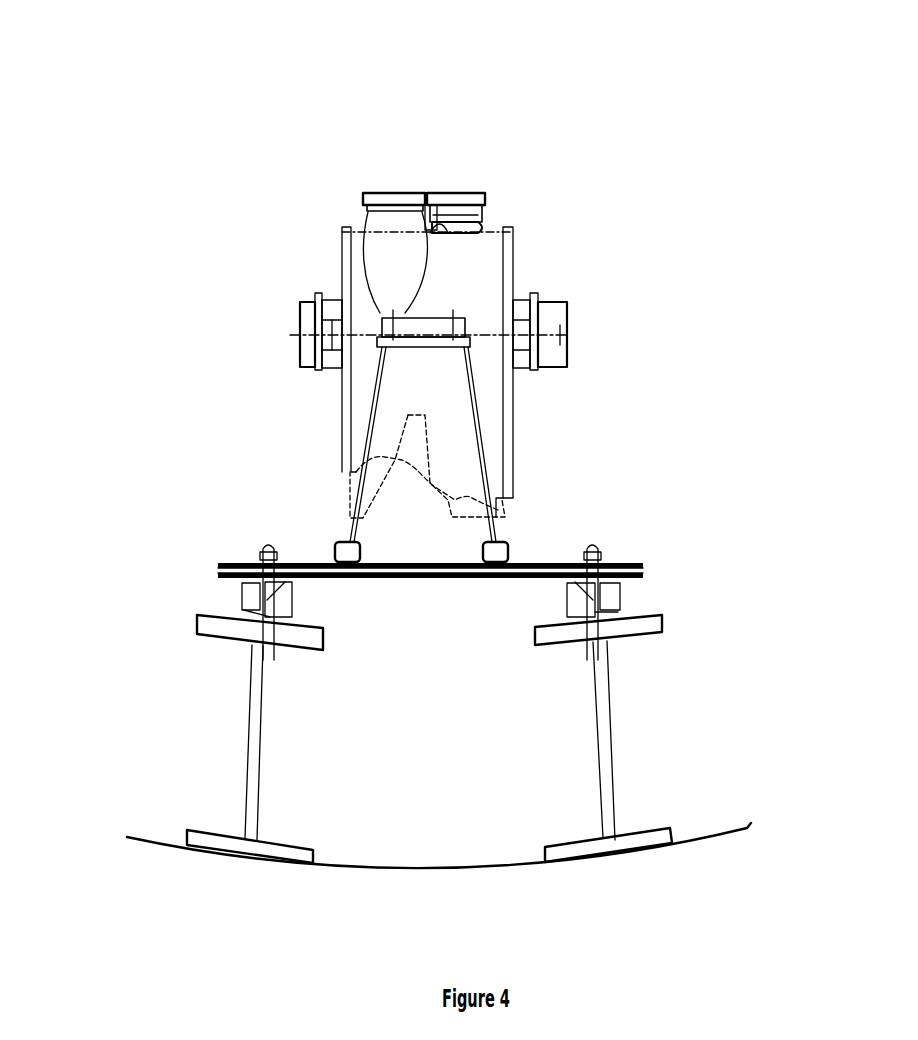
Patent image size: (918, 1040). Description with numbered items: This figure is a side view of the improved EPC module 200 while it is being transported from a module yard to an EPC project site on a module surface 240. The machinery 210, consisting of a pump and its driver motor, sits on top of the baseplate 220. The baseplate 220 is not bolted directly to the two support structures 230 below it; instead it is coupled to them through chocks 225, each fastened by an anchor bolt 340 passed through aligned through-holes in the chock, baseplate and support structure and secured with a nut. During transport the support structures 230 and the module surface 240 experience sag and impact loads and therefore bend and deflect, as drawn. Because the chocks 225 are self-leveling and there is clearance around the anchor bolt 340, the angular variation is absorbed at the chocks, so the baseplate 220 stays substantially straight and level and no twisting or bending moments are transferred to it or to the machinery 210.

The EPC module 200 is at (192, 149).
The machinery 210 is at (432, 333).
The baseplate 220 is at (643, 570).
The chocks 225 is at (567, 597).
The support structures 230 is at (442, 739).
The module surface 240 is at (462, 854).
The anchor bolt 340 is at (235, 585).